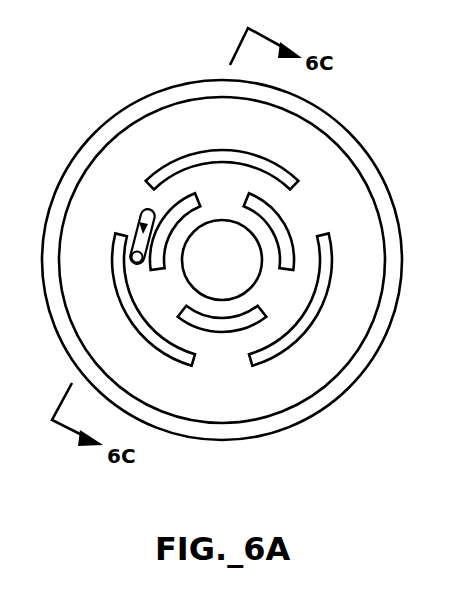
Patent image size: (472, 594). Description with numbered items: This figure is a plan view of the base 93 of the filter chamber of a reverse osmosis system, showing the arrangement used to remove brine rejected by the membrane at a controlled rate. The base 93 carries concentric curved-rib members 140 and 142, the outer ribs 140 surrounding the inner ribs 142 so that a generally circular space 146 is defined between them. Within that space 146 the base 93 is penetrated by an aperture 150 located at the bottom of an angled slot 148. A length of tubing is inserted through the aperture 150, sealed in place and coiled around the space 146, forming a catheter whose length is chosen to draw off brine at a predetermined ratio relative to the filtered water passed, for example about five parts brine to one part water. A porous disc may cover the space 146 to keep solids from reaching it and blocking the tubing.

The base 93 is at (323, 413).
The curved-rib member 140 is at (195, 157).
The curved-rib member 142 is at (178, 215).
The generally circular space 146 is at (222, 235).
The angled slot 148 is at (141, 219).
The aperture 150 is at (138, 263).